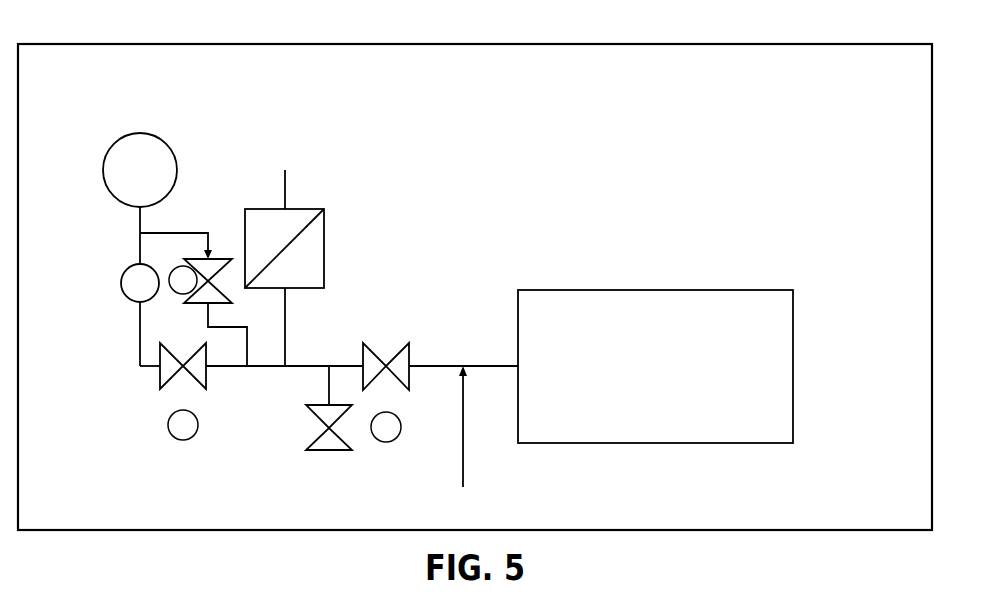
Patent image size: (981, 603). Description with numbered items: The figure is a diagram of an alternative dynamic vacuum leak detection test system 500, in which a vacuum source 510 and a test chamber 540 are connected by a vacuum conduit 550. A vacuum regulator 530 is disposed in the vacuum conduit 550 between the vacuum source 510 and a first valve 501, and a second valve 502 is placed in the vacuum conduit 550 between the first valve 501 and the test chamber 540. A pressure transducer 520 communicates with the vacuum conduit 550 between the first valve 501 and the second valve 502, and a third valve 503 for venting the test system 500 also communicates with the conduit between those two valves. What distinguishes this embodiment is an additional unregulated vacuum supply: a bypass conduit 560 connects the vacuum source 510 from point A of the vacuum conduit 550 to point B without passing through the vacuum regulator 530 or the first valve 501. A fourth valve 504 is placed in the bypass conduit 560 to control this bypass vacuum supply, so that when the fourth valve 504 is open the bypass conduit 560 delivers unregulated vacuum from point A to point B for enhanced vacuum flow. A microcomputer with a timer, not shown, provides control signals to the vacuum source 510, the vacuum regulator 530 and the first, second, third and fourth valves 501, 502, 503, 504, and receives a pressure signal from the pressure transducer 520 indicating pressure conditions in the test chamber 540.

The test system 500 is at (638, 213).
The first valve 501 is at (193, 376).
The second valve 502 is at (368, 347).
The third valve 503 is at (330, 452).
The fourth valve 504 is at (196, 233).
The vacuum source 510 is at (126, 137).
The pressure transducer 520 is at (325, 251).
The vacuum regulator 530 is at (133, 301).
The test chamber 540 is at (638, 398).
The vacuum conduit 550 is at (462, 459).
The bypass conduit 560 is at (253, 355).